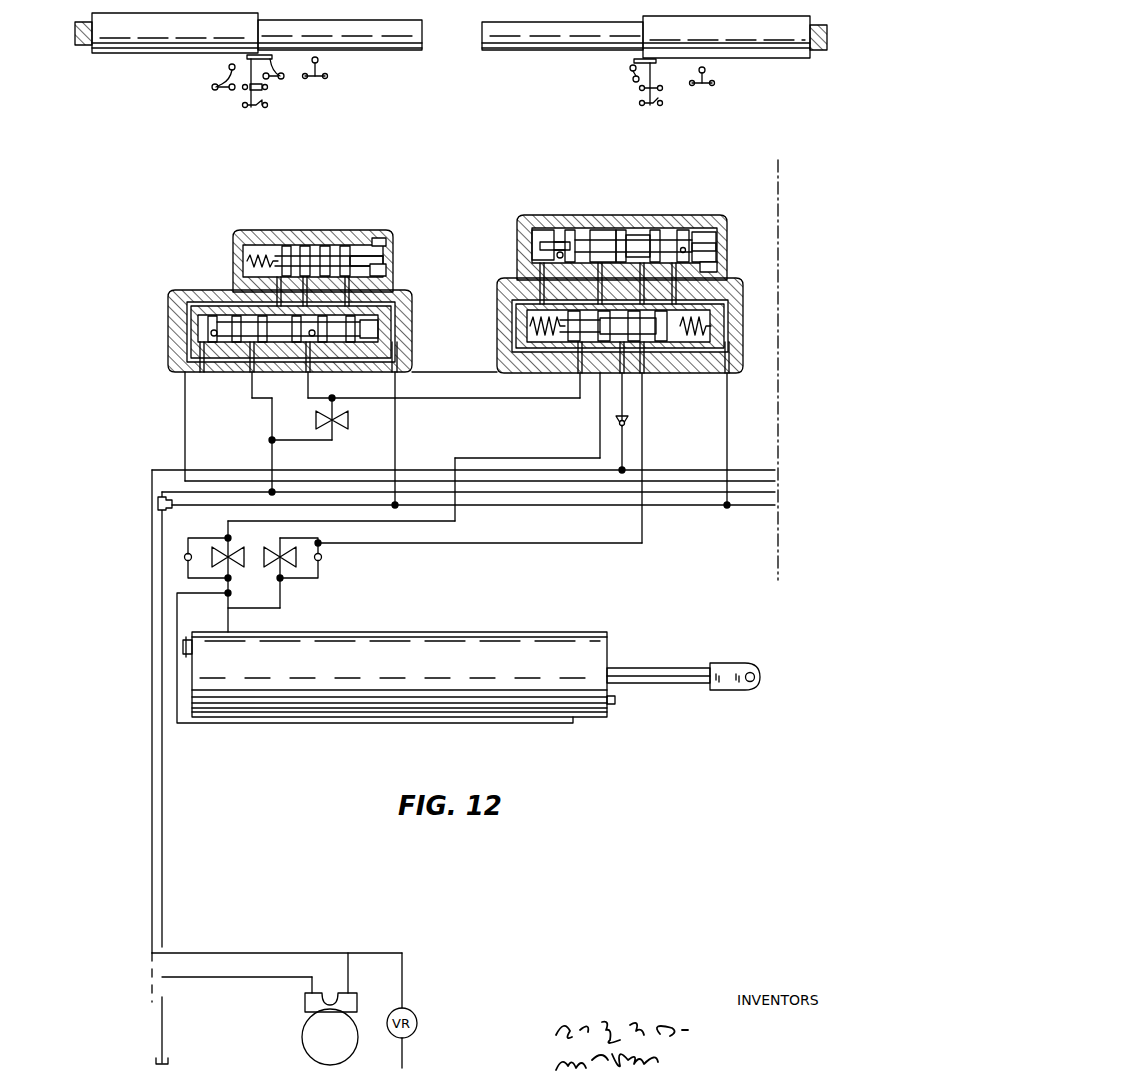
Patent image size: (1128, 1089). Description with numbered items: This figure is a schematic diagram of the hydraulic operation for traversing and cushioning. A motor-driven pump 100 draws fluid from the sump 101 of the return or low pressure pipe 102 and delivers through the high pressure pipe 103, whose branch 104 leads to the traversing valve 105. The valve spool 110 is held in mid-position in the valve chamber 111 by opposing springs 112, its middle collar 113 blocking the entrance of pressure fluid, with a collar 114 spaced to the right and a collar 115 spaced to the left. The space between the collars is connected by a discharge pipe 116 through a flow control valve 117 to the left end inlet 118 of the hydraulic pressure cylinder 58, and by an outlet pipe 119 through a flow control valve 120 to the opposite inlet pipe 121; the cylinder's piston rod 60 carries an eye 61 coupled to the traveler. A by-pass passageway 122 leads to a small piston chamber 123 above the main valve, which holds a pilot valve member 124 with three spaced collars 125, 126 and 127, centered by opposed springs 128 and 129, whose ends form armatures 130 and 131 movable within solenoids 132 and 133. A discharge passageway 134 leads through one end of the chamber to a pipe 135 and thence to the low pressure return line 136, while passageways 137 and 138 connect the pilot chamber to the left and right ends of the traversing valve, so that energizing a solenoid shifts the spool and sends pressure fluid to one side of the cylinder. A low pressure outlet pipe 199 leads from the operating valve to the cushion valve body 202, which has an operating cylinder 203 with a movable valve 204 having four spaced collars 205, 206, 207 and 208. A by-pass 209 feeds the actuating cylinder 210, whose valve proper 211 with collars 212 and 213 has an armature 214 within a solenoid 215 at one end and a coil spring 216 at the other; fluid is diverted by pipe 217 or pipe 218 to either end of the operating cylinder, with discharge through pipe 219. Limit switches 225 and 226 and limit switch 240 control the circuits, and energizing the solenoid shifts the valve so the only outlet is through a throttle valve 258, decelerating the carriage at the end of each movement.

The limit switch 225 is at (628, 72).
The limit switch 226 is at (648, 104).
The limit switch 240 is at (703, 88).
The hydraulic pressure cylinder 58 is at (387, 641).
The piston rod 60 is at (663, 671).
The eye 61 is at (762, 679).
The pump 100 is at (318, 1042).
The sump 101 is at (163, 912).
The return or low pressure pipe 102 is at (164, 524).
The high pressure pipe 103 is at (151, 750).
The branch 104 is at (624, 443).
The traversing valve 105 is at (735, 352).
The valve spool 110 is at (604, 344).
The valve chamber 111 is at (690, 344).
The opposing springs 112 is at (528, 325).
The collar 113 is at (631, 344).
The collar 114 is at (661, 344).
The collar 115 is at (574, 344).
The discharge pipe 116 is at (643, 537).
The flow control valve 117 is at (322, 551).
The left end inlet 118 is at (229, 622).
The outlet pipe 119 is at (566, 456).
The flow control valve 120 is at (184, 557).
The inlet pipe 121 is at (575, 724).
The by-pass passageway 122 is at (515, 356).
The piston chamber 123 is at (681, 232).
The pilot valve member 124 is at (640, 236).
The collar 125 is at (568, 232).
The collar 126 is at (622, 230).
The collar 127 is at (658, 232).
The spring 128 is at (556, 255).
The spring 129 is at (716, 264).
The armature 130 is at (548, 244).
The armature 131 is at (716, 246).
The solenoid 132 is at (533, 232).
The solenoid 133 is at (718, 224).
The discharge passageway 134 is at (600, 229).
The pipe 135 is at (728, 423).
The low pressure return line 136 is at (745, 510).
The passageway 137 is at (535, 285).
The passageway 138 is at (728, 298).
The low pressure outlet pipe 199 is at (435, 399).
The valve body 202 is at (180, 340).
The operating cylinder 203 is at (385, 342).
The movable valve 204 is at (243, 344).
The collar 205 is at (214, 344).
The collar 206 is at (262, 344).
The collar 207 is at (298, 344).
The collar 208 is at (334, 344).
The by-pass 209 is at (190, 321).
The actuating cylinder 210 is at (268, 234).
The valve proper 211 is at (306, 250).
The collar 212 is at (326, 250).
The collar 213 is at (286, 247).
The armature 214 is at (384, 254).
The solenoid 215 is at (373, 272).
The coil spring 216 is at (245, 261).
The pipe 217 is at (360, 310).
The pipe 218 is at (242, 288).
The pipe 219 is at (270, 420).
The throttle valve 258 is at (346, 421).